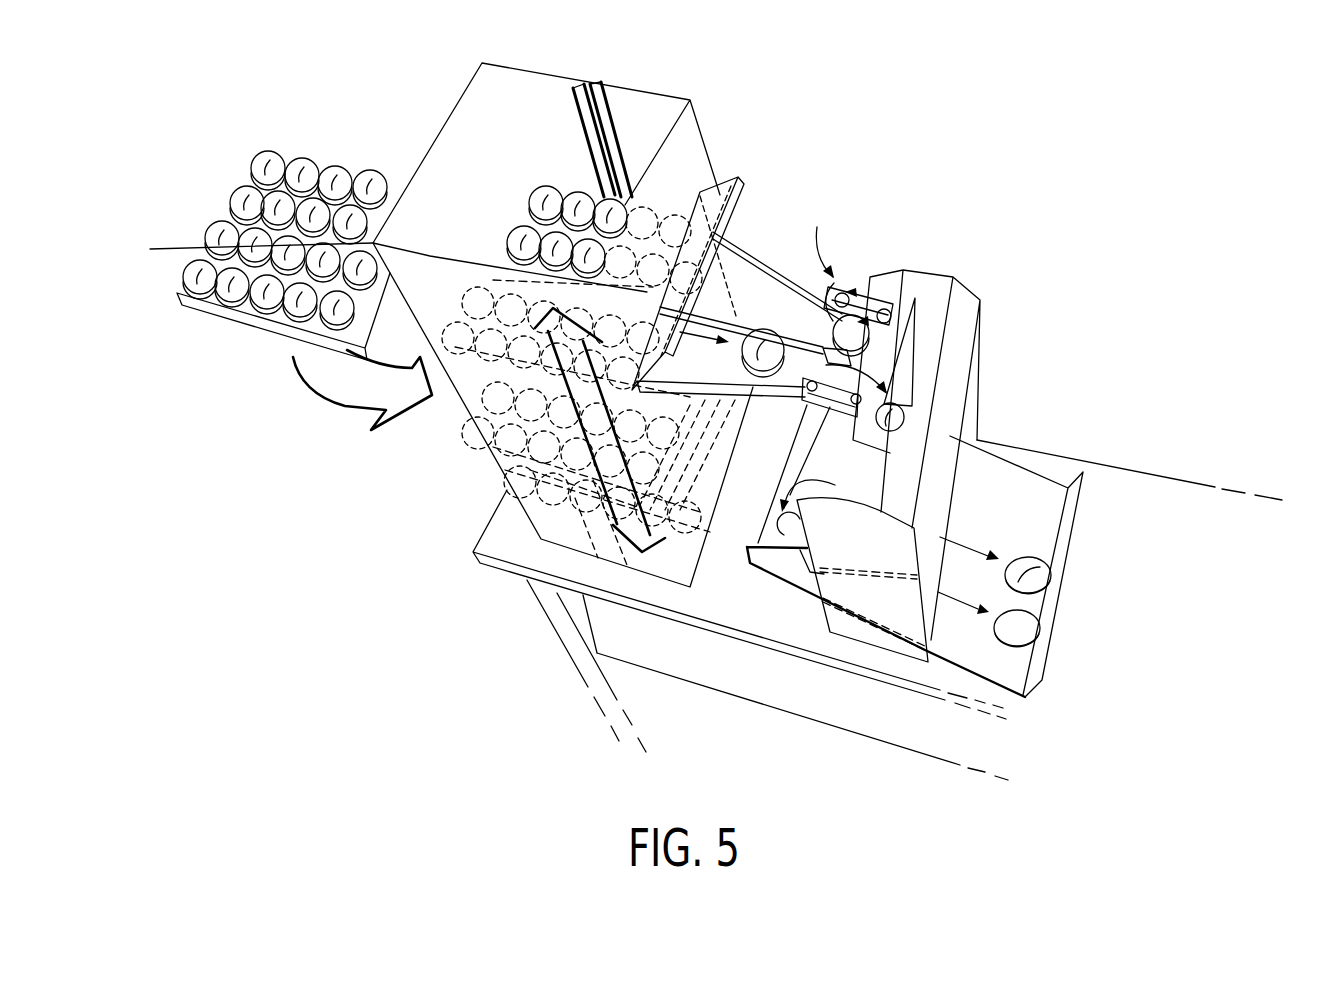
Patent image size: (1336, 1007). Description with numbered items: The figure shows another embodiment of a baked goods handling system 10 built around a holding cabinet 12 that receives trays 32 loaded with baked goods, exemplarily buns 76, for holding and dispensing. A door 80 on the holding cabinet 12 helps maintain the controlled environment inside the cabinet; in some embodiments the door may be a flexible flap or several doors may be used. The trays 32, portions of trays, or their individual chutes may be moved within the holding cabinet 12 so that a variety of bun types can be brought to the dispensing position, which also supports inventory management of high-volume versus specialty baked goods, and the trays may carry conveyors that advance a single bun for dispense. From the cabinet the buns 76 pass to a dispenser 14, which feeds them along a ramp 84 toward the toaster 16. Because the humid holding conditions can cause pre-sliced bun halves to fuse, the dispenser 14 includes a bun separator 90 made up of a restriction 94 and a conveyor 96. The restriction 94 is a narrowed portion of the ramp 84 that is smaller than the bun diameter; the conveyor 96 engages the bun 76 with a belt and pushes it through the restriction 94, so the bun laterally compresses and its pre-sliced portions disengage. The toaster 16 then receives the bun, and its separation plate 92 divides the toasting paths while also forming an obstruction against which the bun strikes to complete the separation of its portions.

The baked goods handling system 10 is at (752, 72).
The holding cabinet 12 is at (513, 78).
The dispenser 14 is at (752, 285).
The toaster 16 is at (927, 287).
The cabinet tray 32 is at (216, 306).
The bun 76 is at (240, 198).
The door 80 is at (723, 192).
The ramp 84 is at (694, 362).
The bun separator 90 is at (855, 470).
The separation plate 92 is at (908, 322).
The restriction 94 is at (840, 327).
The conveyor 96 is at (870, 283).